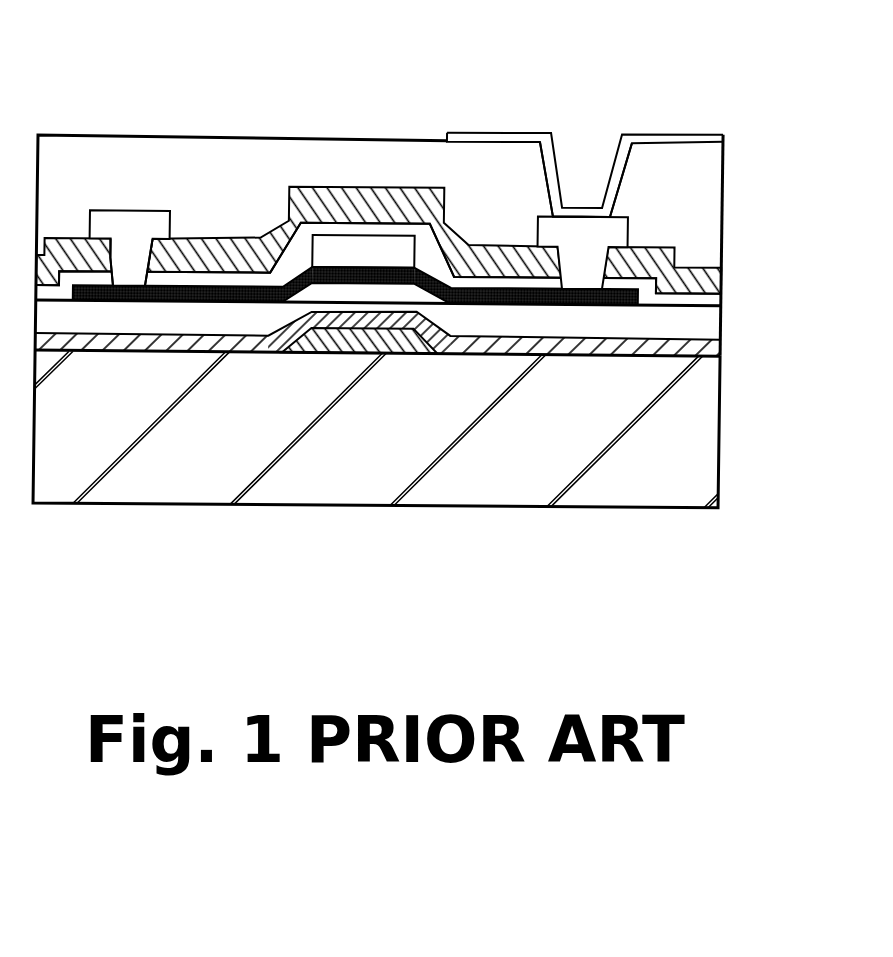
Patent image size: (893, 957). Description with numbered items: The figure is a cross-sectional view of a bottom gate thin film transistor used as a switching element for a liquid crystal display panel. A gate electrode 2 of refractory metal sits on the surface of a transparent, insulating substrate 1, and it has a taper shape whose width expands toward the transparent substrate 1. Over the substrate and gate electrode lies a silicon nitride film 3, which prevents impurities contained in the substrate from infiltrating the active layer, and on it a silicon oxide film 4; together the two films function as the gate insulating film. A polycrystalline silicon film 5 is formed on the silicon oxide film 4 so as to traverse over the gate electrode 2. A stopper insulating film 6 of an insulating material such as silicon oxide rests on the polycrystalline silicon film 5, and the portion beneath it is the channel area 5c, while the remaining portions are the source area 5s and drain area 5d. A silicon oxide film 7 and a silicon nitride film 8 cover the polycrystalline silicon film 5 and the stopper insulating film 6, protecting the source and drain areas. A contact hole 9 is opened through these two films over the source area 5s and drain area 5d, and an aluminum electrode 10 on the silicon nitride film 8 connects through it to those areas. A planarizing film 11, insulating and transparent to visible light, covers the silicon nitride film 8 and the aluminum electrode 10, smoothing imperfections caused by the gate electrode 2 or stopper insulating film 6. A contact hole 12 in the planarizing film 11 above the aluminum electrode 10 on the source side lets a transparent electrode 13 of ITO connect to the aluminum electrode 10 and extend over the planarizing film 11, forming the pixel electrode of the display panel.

The transparent insulating substrate 1 is at (697, 480).
The gate electrode 2 is at (318, 340).
The silicon nitride film 3 is at (710, 353).
The silicon oxide film 4 is at (710, 327).
The polycrystalline silicon film 5 is at (349, 343).
The channel area 5c is at (372, 275).
The drain area 5d is at (233, 293).
The source area 5s is at (485, 298).
The stopper insulating film 6 is at (335, 245).
The silicon oxide film 7 is at (710, 300).
The silicon nitride film 8 is at (710, 277).
The contact hole 9 is at (113, 258).
The aluminum electrode 10 is at (162, 238).
The planarizing film 11 is at (705, 205).
The contact hole 12 is at (608, 178).
The transparent electrode 13 is at (618, 183).